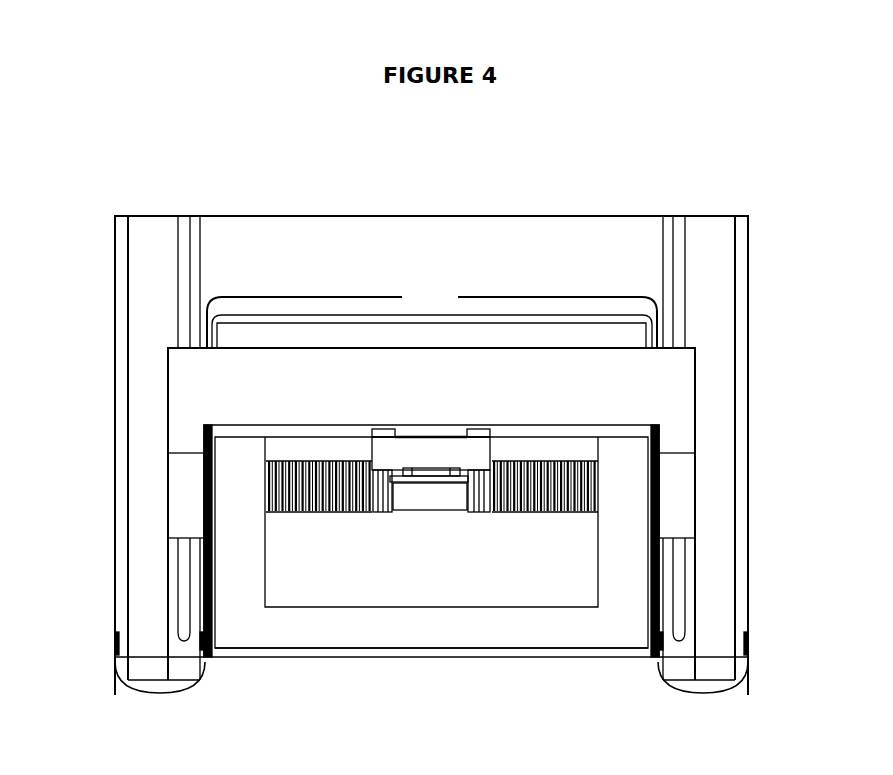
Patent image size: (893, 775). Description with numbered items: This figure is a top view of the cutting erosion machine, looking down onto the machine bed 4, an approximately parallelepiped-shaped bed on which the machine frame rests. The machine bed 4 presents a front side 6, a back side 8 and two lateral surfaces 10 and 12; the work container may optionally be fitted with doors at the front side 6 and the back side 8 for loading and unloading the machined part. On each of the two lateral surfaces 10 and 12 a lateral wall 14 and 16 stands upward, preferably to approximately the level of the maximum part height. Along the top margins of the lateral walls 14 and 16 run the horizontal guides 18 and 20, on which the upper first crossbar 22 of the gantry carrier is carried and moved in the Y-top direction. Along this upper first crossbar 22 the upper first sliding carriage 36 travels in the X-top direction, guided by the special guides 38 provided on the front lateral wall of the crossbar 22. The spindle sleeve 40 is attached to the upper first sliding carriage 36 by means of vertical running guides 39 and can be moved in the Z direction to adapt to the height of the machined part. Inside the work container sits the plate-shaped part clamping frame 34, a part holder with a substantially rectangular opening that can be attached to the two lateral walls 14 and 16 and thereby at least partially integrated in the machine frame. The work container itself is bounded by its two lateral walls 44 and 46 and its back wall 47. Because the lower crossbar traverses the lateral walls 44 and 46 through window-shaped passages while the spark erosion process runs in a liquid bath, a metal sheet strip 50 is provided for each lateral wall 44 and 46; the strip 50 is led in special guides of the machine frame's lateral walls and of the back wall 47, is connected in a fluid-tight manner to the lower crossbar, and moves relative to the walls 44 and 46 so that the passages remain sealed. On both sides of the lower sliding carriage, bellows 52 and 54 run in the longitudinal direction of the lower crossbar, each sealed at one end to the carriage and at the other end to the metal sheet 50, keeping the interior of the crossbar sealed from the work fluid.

The machine bed 4 is at (552, 275).
The front side 6 is at (430, 670).
The back side 8 is at (430, 206).
The lateral surface 10 is at (104, 490).
The lateral surface 12 is at (760, 491).
The lateral wall 14 is at (136, 455).
The lateral wall 16 is at (725, 455).
The guide 18 is at (177, 232).
The guide 20 is at (676, 232).
The upper first crossbar 22 is at (272, 395).
The part clamping frame 34 is at (431, 538).
The upper first sliding carriage 36 is at (432, 460).
The guides 38 is at (218, 422).
The vertical running guides 39 is at (393, 470).
The spindle sleeve 40 is at (428, 511).
The lateral wall of work container 44 is at (212, 605).
The lateral wall of work container 46 is at (650, 608).
The back wall 47 is at (300, 320).
The metal sheet strip 50 is at (385, 297).
The bellows 52 is at (324, 513).
The bellows 54 is at (531, 513).